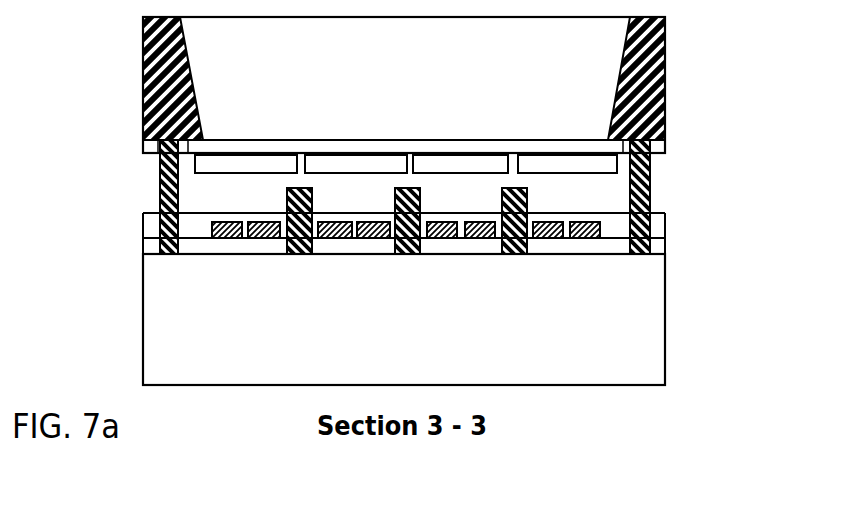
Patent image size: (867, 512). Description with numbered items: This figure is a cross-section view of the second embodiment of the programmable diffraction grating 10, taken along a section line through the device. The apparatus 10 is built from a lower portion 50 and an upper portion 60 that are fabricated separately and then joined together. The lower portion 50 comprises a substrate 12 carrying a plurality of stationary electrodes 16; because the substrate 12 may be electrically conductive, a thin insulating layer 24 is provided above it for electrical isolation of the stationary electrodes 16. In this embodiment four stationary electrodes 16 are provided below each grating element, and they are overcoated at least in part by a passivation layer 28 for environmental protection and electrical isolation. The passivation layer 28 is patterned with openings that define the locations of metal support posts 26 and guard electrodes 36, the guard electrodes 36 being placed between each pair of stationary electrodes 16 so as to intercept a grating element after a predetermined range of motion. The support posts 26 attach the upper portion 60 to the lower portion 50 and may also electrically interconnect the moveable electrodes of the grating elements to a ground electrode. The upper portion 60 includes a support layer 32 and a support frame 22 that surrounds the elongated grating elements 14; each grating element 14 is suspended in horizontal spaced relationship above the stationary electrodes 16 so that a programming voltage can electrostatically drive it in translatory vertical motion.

The programmable diffraction grating 10 is at (632, 418).
The substrate 12 is at (648, 324).
The grating elements 14 is at (347, 174).
The stationary electrodes 16 is at (592, 222).
The support frame 22 is at (665, 95).
The insulating layer 24 is at (652, 247).
The support posts 26 is at (650, 200).
The passivation layer 28 is at (652, 227).
The support layer 32 is at (650, 149).
The guard electrodes 36 is at (287, 204).
The lower portion 50 is at (728, 182).
The upper portion 60 is at (728, 18).